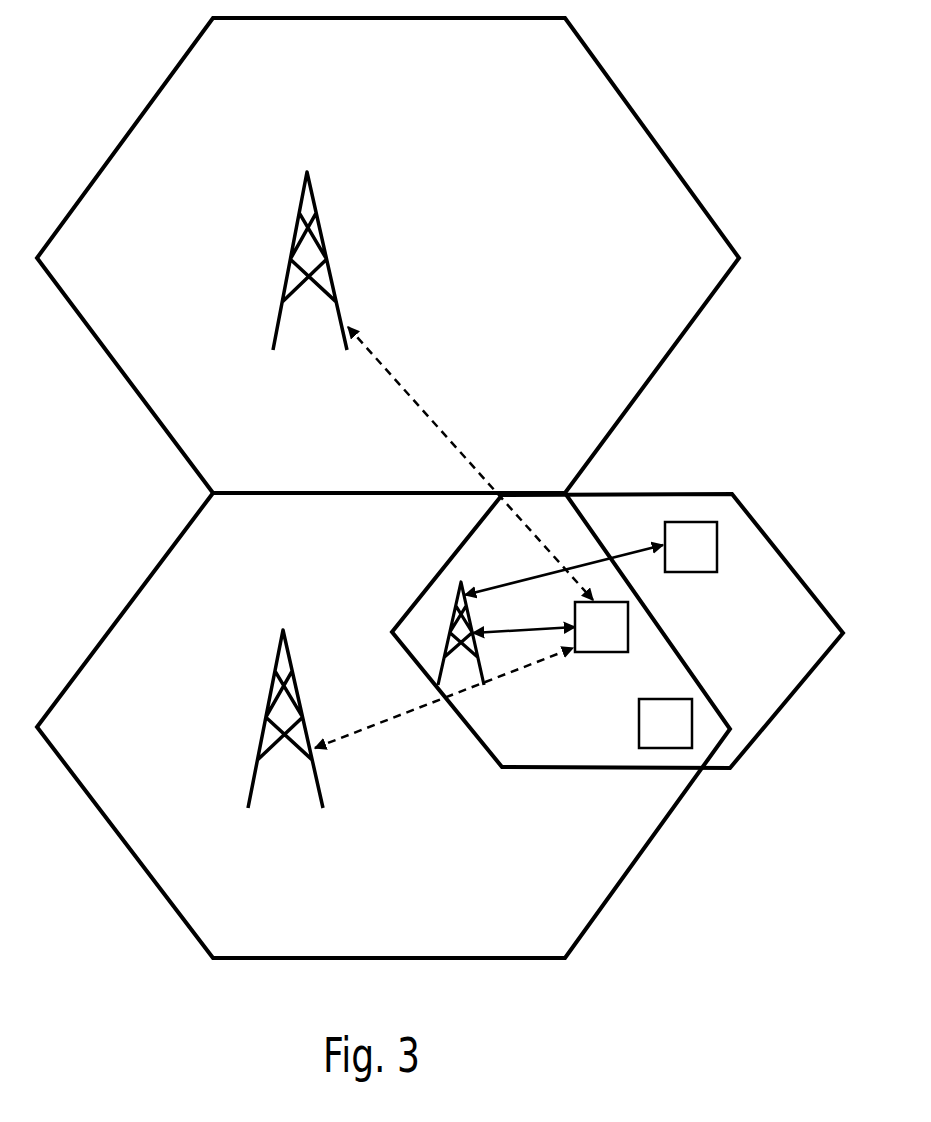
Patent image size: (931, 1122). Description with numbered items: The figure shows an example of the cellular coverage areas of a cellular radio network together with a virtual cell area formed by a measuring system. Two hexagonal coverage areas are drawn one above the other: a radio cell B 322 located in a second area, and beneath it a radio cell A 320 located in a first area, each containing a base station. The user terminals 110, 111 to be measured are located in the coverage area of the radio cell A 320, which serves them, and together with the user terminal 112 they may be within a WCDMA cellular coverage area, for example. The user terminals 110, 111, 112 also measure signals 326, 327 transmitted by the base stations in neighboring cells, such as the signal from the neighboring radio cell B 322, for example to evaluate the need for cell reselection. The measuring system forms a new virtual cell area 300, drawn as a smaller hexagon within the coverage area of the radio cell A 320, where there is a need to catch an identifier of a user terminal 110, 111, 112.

The radio cell B 322 is at (137, 123).
The radio cell A 320 is at (145, 579).
The virtual cell area 300 is at (665, 493).
The signal 326 is at (412, 398).
The signal 327 is at (348, 737).
The user terminal 110 is at (601, 627).
The user terminal 111 is at (665, 724).
The user terminal 112 is at (691, 547).